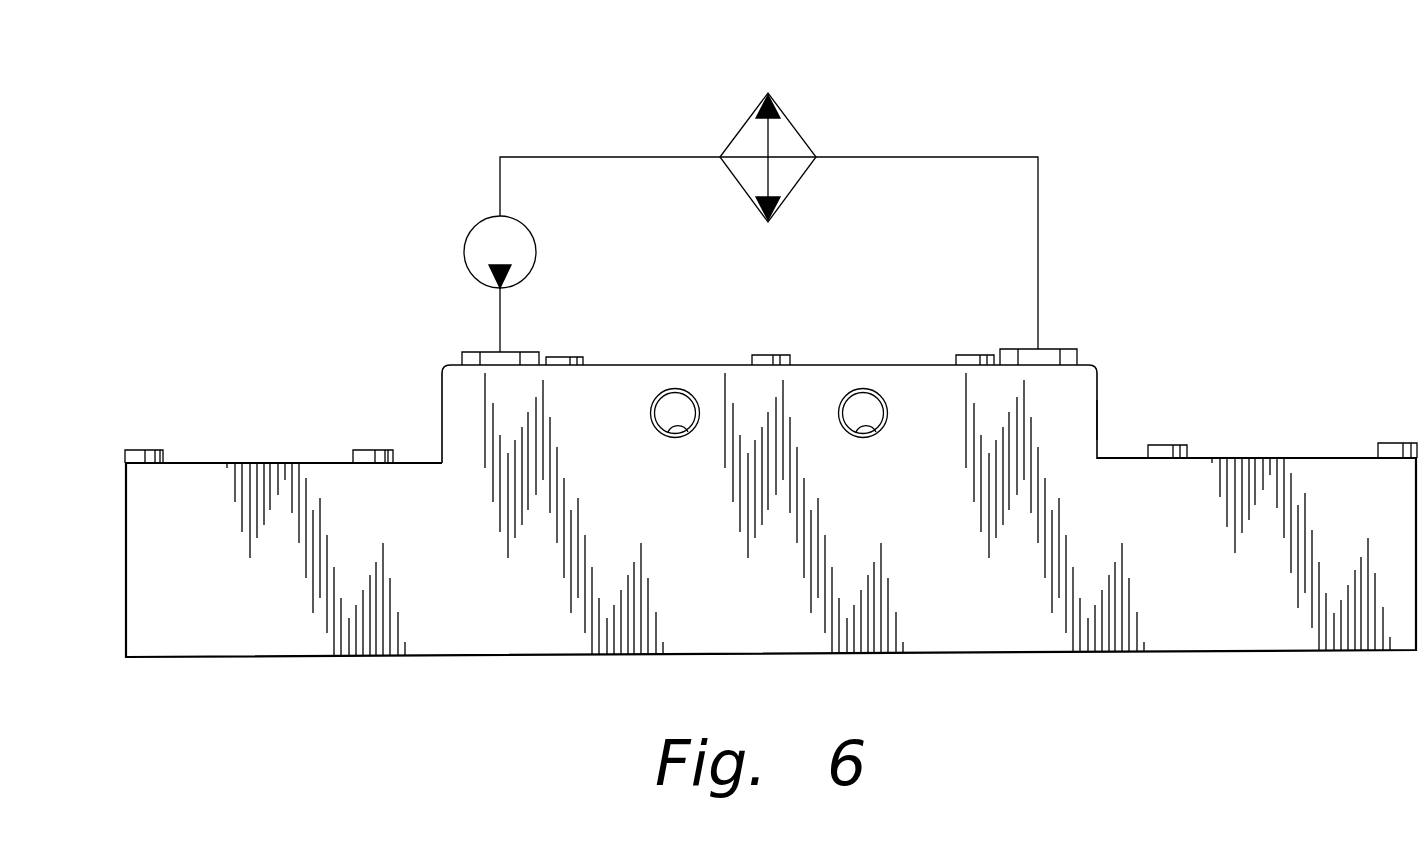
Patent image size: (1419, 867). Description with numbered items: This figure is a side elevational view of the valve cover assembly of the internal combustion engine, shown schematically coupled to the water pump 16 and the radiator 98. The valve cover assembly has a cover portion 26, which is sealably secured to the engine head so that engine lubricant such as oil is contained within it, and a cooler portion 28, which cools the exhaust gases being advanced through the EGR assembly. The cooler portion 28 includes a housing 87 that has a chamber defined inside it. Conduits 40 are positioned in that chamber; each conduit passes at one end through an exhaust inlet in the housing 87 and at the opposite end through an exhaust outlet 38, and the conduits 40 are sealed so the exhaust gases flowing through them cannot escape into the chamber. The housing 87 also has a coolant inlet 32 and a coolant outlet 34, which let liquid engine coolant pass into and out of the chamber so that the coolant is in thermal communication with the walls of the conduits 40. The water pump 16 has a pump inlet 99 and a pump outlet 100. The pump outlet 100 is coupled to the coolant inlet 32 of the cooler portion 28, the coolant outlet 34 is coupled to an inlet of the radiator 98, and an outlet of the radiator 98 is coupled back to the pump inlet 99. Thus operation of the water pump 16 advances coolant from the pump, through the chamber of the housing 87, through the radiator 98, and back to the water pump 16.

The water pump 16 is at (465, 247).
The cover portion 26 is at (1267, 458).
The cooler portion 28 is at (1098, 397).
The coolant inlet 32 is at (482, 362).
The coolant outlet 34 is at (1050, 362).
The exhaust outlet 38 is at (692, 433).
The conduits 40 is at (657, 393).
The housing 87 is at (1067, 435).
The radiator 98 is at (797, 128).
The pump inlet 99 is at (500, 216).
The pump outlet 100 is at (495, 289).